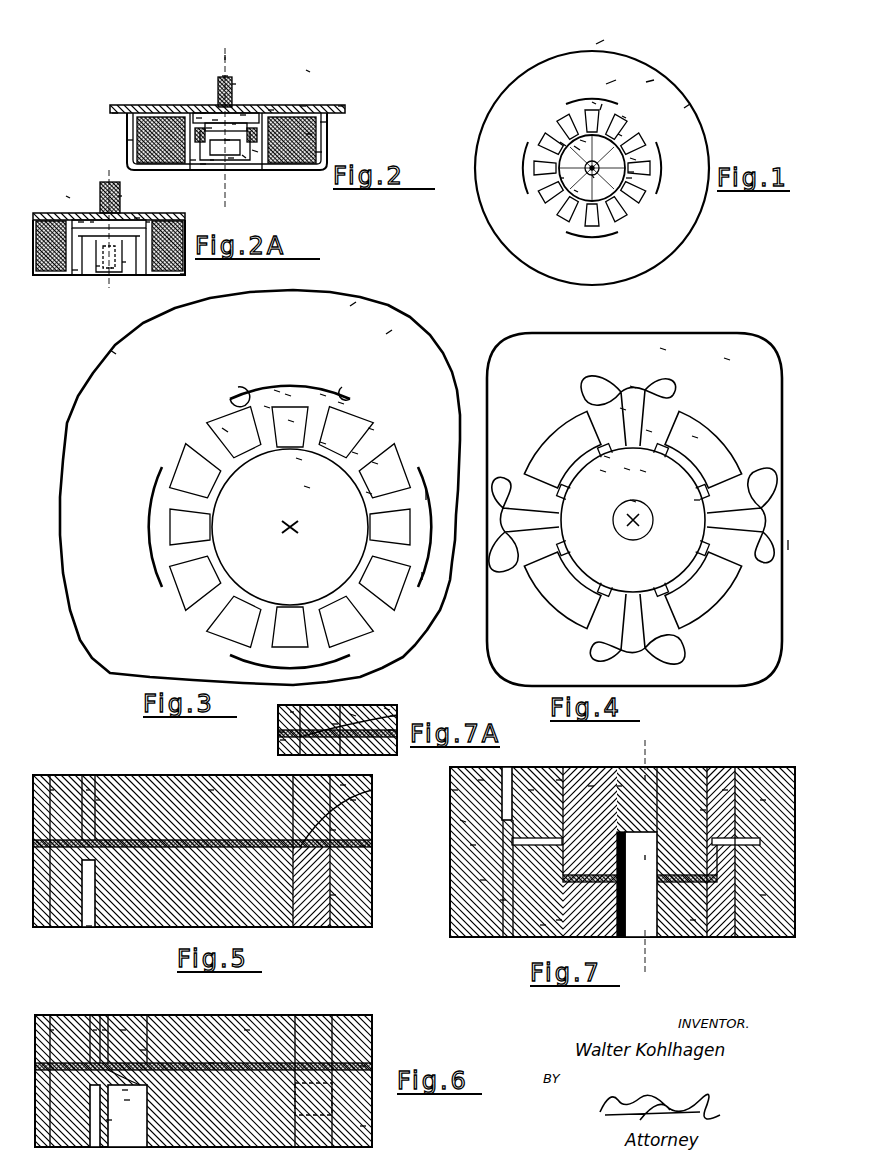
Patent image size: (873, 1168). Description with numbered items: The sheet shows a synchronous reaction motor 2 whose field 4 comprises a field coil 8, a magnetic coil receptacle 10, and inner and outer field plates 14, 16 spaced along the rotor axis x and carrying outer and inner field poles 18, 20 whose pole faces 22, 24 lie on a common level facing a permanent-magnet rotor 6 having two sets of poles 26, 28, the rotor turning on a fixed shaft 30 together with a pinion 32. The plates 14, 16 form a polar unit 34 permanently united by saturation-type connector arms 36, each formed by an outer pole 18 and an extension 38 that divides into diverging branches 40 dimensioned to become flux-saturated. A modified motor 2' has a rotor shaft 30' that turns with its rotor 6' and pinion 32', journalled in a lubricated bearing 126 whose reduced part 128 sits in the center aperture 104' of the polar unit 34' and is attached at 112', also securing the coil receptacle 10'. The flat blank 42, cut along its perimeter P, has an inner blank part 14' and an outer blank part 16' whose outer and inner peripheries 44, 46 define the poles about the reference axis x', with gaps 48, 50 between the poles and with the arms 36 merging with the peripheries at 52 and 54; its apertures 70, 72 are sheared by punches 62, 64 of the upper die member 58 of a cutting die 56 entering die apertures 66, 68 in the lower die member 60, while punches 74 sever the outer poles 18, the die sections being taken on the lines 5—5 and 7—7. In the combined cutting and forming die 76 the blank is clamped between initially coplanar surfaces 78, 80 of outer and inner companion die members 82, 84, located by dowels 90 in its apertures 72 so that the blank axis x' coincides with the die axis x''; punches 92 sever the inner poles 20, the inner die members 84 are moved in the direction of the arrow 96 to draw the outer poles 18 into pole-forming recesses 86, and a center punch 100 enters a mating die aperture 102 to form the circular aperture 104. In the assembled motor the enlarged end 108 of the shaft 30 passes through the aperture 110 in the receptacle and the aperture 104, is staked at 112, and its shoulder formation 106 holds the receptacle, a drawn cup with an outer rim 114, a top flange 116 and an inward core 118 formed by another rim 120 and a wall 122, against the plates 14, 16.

In FIG. 1, the synchronous reaction motor 2 is at (605, 22).
In FIG. 2, the synchronous reaction motor 2 is at (316, 51).
In FIG. 2A, the modified motor 2' is at (60, 177).
In FIG. 1, the field 4 is at (688, 106).
In FIG. 2, the field 4 is at (344, 106).
In FIG. 1, the rotor 6 is at (596, 183).
In FIG. 2, the rotor 6 is at (204, 93).
In FIG. 3, the rotor 6 is at (271, 566).
In FIG. 2A, the rotor 6' is at (84, 198).
In FIG. 2, the field coil 8 is at (320, 152).
In FIG. 4, the field coil 8 is at (473, 543).
In FIG. 2, the coil receptacle 10 is at (311, 184).
In FIG. 2A, the coil receptacle 10' is at (195, 276).
In FIG. 7, the coil receptacle 10' is at (450, 822).
In FIG. 1, the inner field plate 14 is at (553, 211).
In FIG. 2, the inner field plate 14 is at (202, 179).
In FIG. 4, the inner field plate 14 is at (712, 495).
In FIG. 3, the inner blank part 14' is at (379, 495).
In FIG. 5, the inner blank part 14' is at (163, 795).
In FIG. 7A, the inner blank part 14' is at (267, 728).
In FIG. 7, the inner blank part 14' is at (698, 938).
In FIG. 6, the inner blank part 14' is at (221, 1025).
In FIG. 1, the outer field plate 16 is at (659, 63).
In FIG. 2, the outer field plate 16 is at (311, 92).
In FIG. 4, the outer field plate 16 is at (738, 337).
In FIG. 3, the outer blank part 16' is at (365, 286).
In FIG. 5, the outer blank part 16' is at (224, 794).
In FIG. 7A, the outer blank part 16' is at (408, 712).
In FIG. 7, the outer blank part 16' is at (781, 768).
In FIG. 6, the outer blank part 16' is at (225, 1023).
In FIG. 1, the outer field poles 18 is at (586, 204).
In FIG. 2, the outer field poles 18 is at (212, 162).
In FIG. 2A, the outer field poles 18 is at (150, 222).
In FIG. 3, the outer field poles 18 is at (378, 566).
In FIG. 4, the outer field poles 18 is at (650, 556).
In FIG. 5, the outer field poles 18 is at (354, 800).
In FIG. 7, the outer field poles 18 is at (736, 937).
In FIG. 1, the inner field poles 20 is at (618, 190).
In FIG. 2, the inner field poles 20 is at (276, 112).
In FIG. 3, the inner field poles 20 is at (280, 568).
In FIG. 4, the inner field poles 20 is at (662, 546).
In FIG. 7A, the inner field poles 20 is at (334, 724).
In FIG. 1, the pole faces 22 is at (574, 208).
In FIG. 2, the pole faces 22 is at (258, 113).
In FIG. 4, the pole faces 22 is at (636, 546).
In FIG. 7, the pole faces 22 is at (700, 808).
In FIG. 1, the pole faces 24 is at (562, 194).
In FIG. 2, the pole faces 24 is at (242, 114).
In FIG. 4, the pole faces 24 is at (598, 590).
In FIG. 7A, the pole faces 24 is at (284, 740).
In FIG. 1, the rotor poles 26 is at (584, 212).
In FIG. 1, the rotor poles 28 is at (628, 178).
In FIG. 1, the rotor shaft 30 is at (662, 186).
In FIG. 2, the rotor shaft 30 is at (212, 61).
In FIG. 2A, the rotor shaft 30' is at (82, 284).
In FIG. 1, the pinion 32 is at (533, 189).
In FIG. 2, the pinion 32 is at (249, 72).
In FIG. 2A, the pinion 32' is at (132, 183).
In FIG. 1, the polar unit 34 is at (623, 58).
In FIG. 2, the polar unit 34 is at (282, 88).
In FIG. 4, the polar unit 34 is at (676, 324).
In FIG. 7, the polar unit 34 is at (455, 863).
In FIG. 2A, the polar unit 34' is at (155, 205).
In FIG. 1, the saturation arms 36 is at (598, 236).
In FIG. 2, the saturation arms 36 is at (208, 128).
In FIG. 3, the saturation arms 36 is at (286, 622).
In FIG. 4, the saturation arms 36 is at (614, 620).
In FIG. 7, the saturation arms 36 is at (556, 780).
In FIG. 1, the pole extensions 38 is at (614, 216).
In FIG. 3, the pole extensions 38 is at (338, 608).
In FIG. 4, the pole extensions 38 is at (646, 606).
In FIG. 1, the diverging branches 40 is at (618, 218).
In FIG. 3, the diverging branches 40 is at (290, 656).
In FIG. 4, the diverging branches 40 is at (662, 620).
In FIG. 3, the blank 42 is at (390, 333).
In FIG. 5, the blank 42 is at (366, 846).
In FIG. 6, the blank 42 is at (366, 1066).
In FIG. 3, the outer periphery 44 is at (376, 600).
In FIG. 5, the outer periphery 44 is at (336, 830).
In FIG. 6, the outer periphery 44 is at (142, 1050).
In FIG. 3, the inner periphery 46 is at (270, 660).
In FIG. 5, the inner periphery 46 is at (88, 928).
In FIG. 6, the inner periphery 46 is at (94, 1030).
In FIG. 3, the gaps 48 is at (316, 536).
In FIG. 3, the gaps 50 is at (346, 622).
In FIG. 4, the gaps 50 is at (680, 640).
In FIG. 3, the merging location 52 is at (300, 556).
In FIG. 3, the merging location 54 is at (268, 640).
In FIG. 5, the cutting die 56 is at (120, 774).
In FIG. 6, the cutting die 56 is at (284, 1014).
In FIG. 5, the upper die member 58 is at (210, 790).
In FIG. 6, the upper die member 58 is at (246, 1030).
In FIG. 5, the lower die member 60 is at (262, 926).
In FIG. 6, the lower die member 60 is at (362, 1126).
In FIG. 5, the punch 62 is at (346, 785).
In FIG. 6, the punch 62 is at (350, 1030).
In FIG. 5, the punch 64 is at (88, 790).
In FIG. 6, the punch 64 is at (104, 1030).
In FIG. 6, the die aperture 66 is at (132, 1105).
In FIG. 6, the die aperture 68 is at (330, 1116).
In FIG. 3, the apertures 70 is at (250, 636).
In FIG. 6, the apertures 70 is at (132, 1090).
In FIG. 3, the apertures 72 is at (314, 660).
In FIG. 5, the apertures 72 is at (98, 800).
In FIG. 7, the apertures 72 is at (502, 898).
In FIG. 5, the punches 74 is at (334, 895).
In FIG. 7A, the combined cutting and forming die 76 is at (388, 710).
In FIG. 7, the combined cutting and forming die 76 is at (726, 790).
In FIG. 7, the clamping surface 78 is at (740, 790).
In FIG. 7, the clamping surface 80 is at (520, 937).
In FIG. 7A, the outer die members 82 is at (330, 752).
In FIG. 7, the outer die members 82 is at (764, 937).
In FIG. 7A, the inner die members 84 is at (292, 750).
In FIG. 7, the inner die members 84 is at (676, 937).
In FIG. 7, the pole-forming recesses 86 is at (722, 937).
In FIG. 7, the dowels 90 is at (462, 820).
In FIG. 7A, the punches 92 is at (354, 714).
In FIG. 7, the punches 92 is at (456, 790).
In FIG. 7, the arrow 96 is at (680, 752).
In FIG. 7, the center punch 100 is at (618, 786).
In FIG. 7, the die aperture 102 is at (654, 940).
In FIG. 2, the center aperture 104 is at (220, 154).
In FIG. 4, the center aperture 104 is at (640, 490).
In FIG. 2A, the center aperture 104' is at (51, 283).
In FIG. 2, the shoulder formation 106 is at (244, 158).
In FIG. 2, the enlarged shaft end 108 is at (232, 160).
In FIG. 2, the receptacle aperture 110 is at (256, 152).
In FIG. 2, the staking 112 is at (243, 103).
In FIG. 2A, the attachment 112' is at (60, 208).
In FIG. 2, the outer rim 114 is at (128, 142).
In FIG. 2, the top flange 116 is at (116, 113).
In FIG. 2, the inward core 118 is at (310, 134).
In FIG. 2, the rim 120 is at (192, 160).
In FIG. 2, the wall 122 is at (324, 124).
In FIG. 2A, the lubricated bearing 126 is at (110, 270).
In FIG. 2A, the reduced part 128 is at (124, 264).
In FIG. 3, the perimeter P is at (114, 352).
In FIG. 2, the rotor axis x is at (233, 128).
In FIG. 7, the reference axis x' is at (643, 882).
In FIG. 7, the die axis x'' is at (655, 858).
In FIG. 3, the section line 5 is at (418, 462).
In FIG. 4, the section line 7 is at (793, 580).